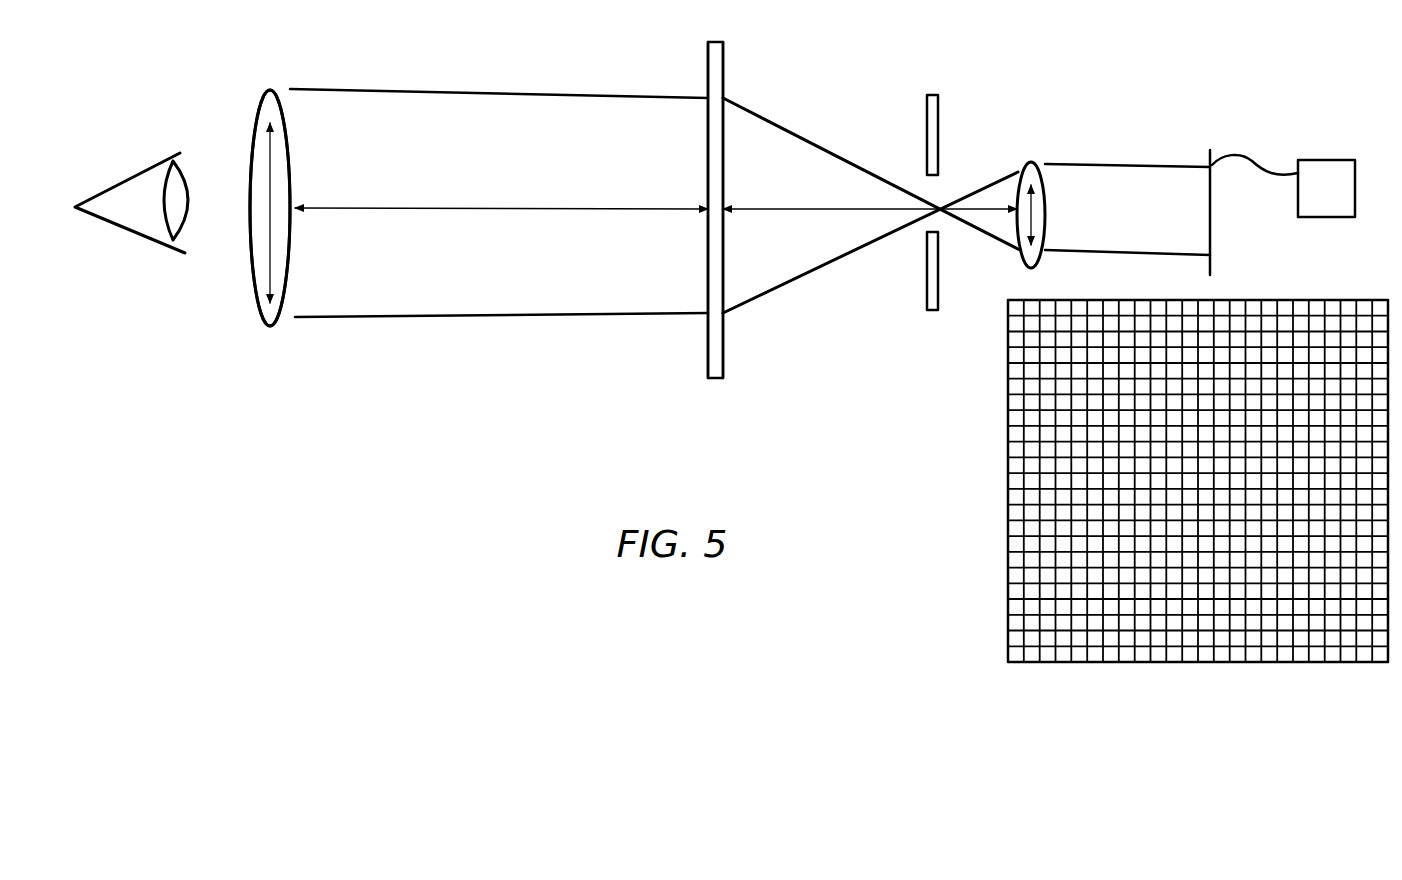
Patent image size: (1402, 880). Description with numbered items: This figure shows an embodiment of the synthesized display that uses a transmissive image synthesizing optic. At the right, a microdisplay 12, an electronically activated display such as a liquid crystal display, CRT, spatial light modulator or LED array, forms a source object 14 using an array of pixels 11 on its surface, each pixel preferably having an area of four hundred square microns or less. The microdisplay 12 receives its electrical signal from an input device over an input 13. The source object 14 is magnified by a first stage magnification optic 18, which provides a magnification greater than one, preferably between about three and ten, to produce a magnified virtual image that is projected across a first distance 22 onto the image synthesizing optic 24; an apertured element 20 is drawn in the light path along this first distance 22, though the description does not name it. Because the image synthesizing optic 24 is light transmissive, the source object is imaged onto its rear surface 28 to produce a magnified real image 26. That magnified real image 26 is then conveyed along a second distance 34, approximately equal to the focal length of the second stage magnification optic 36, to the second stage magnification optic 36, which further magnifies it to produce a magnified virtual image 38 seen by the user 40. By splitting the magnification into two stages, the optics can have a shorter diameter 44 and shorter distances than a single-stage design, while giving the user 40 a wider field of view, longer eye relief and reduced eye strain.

The pixels 11 is at (1166, 481).
The microdisplay 12 is at (1166, 387).
The input 13 is at (1301, 168).
The source object 14 is at (1127, 188).
The first stage magnification optic 18 is at (1006, 229).
The pinhole aperture plate 20 is at (969, 197).
The first distance 22 is at (871, 205).
The image synthesizing optic 24 is at (733, 240).
The magnified real image 26 is at (662, 210).
The rear surface 28 is at (758, 212).
The second distance 34 is at (499, 203).
The second stage magnification optic 36 is at (261, 173).
The magnified virtual image 38 is at (231, 206).
The user 40 is at (131, 211).
The diameter 44 is at (233, 178).